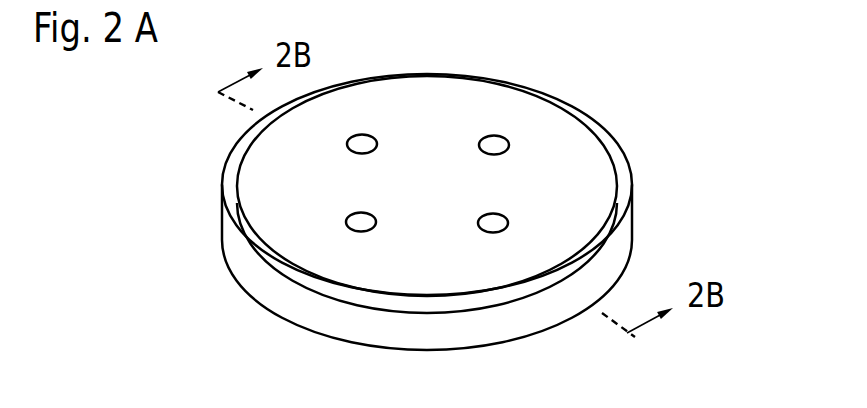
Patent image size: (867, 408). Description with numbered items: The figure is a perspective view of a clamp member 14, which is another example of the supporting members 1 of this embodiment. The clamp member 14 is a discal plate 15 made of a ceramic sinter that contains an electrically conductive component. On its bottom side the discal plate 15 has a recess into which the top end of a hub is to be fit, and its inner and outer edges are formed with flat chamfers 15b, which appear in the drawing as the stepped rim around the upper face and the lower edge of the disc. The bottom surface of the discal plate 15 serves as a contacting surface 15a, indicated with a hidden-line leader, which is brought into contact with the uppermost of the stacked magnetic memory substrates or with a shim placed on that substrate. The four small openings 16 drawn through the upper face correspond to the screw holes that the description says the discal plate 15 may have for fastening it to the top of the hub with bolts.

The supporting member 1 is at (562, 55).
The clamp member 14 is at (660, 102).
The discal plate 15 is at (597, 180).
The contacting surface 15a is at (252, 273).
The flat chamfer 15b is at (233, 192).
The holes 16 is at (480, 138).